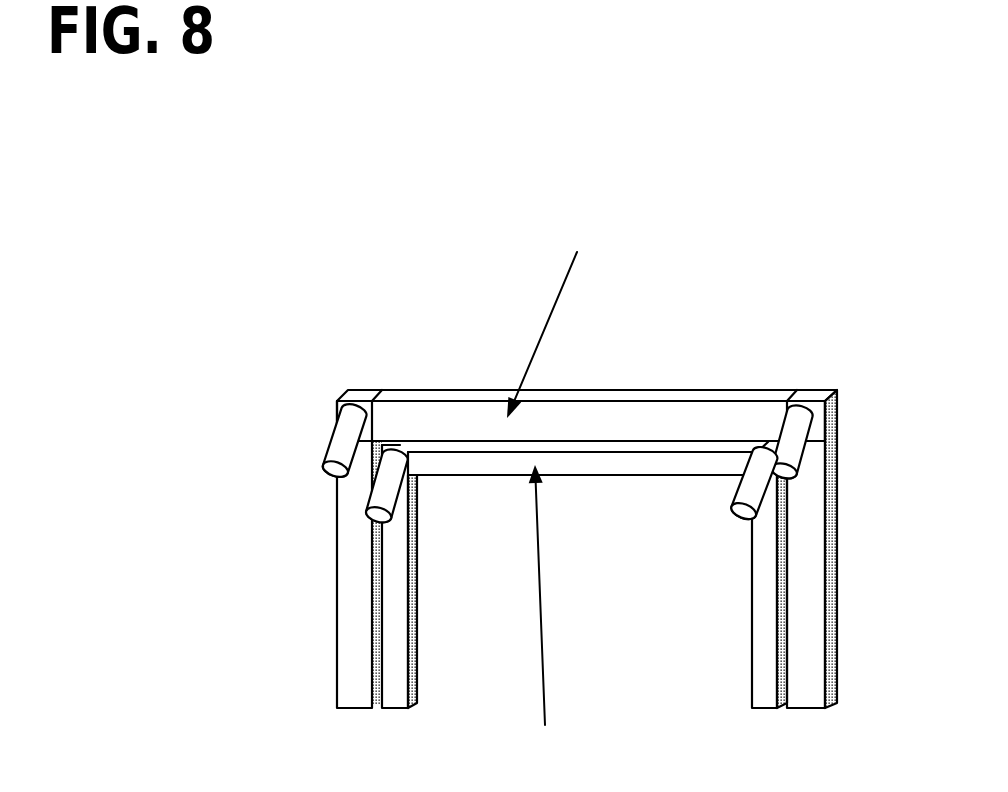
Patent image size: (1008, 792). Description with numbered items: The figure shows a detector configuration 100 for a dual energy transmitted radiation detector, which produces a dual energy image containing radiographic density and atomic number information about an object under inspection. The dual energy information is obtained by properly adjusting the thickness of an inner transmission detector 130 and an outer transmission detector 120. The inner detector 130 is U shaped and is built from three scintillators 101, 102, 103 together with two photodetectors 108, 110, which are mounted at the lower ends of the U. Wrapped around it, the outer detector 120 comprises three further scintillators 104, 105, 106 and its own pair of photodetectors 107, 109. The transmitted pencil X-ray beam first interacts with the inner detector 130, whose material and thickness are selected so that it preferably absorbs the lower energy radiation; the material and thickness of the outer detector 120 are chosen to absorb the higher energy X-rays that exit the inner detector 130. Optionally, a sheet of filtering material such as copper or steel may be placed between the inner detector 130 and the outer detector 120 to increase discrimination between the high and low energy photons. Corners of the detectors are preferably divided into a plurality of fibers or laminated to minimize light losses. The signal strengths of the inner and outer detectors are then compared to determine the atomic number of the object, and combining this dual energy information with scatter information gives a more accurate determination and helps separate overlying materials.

The detector configuration 100 is at (431, 265).
The scintillator 101 is at (417, 530).
The scintillator 102 is at (585, 487).
The scintillator 103 is at (747, 553).
The scintillator 104 is at (362, 390).
The scintillator 105 is at (545, 390).
The scintillator 106 is at (823, 390).
The photodetector 107 is at (345, 443).
The photodetector 108 is at (370, 522).
The photodetector 109 is at (803, 430).
The photodetector 110 is at (760, 487).
The outer transmission detector 120 is at (553, 316).
The inner transmission detector 130 is at (544, 614).